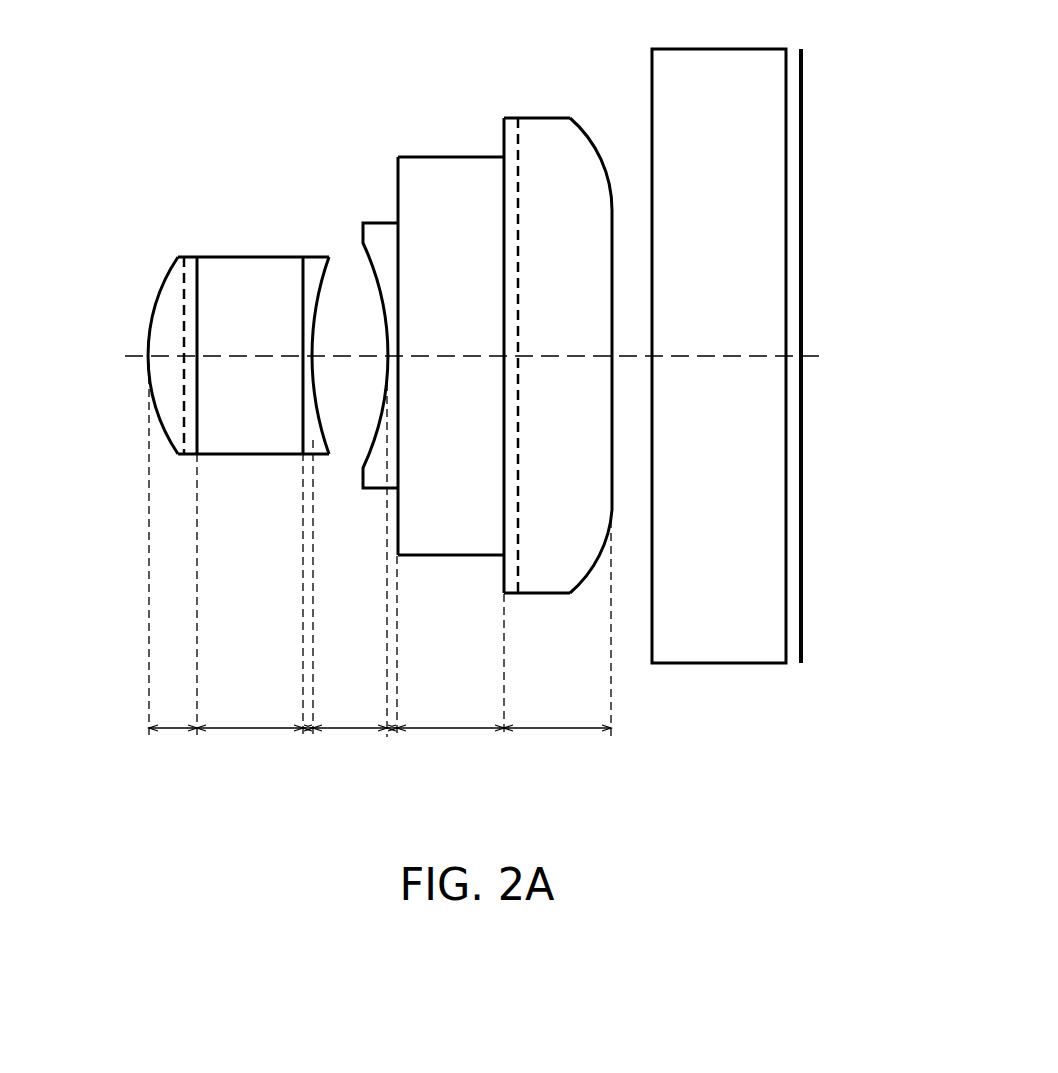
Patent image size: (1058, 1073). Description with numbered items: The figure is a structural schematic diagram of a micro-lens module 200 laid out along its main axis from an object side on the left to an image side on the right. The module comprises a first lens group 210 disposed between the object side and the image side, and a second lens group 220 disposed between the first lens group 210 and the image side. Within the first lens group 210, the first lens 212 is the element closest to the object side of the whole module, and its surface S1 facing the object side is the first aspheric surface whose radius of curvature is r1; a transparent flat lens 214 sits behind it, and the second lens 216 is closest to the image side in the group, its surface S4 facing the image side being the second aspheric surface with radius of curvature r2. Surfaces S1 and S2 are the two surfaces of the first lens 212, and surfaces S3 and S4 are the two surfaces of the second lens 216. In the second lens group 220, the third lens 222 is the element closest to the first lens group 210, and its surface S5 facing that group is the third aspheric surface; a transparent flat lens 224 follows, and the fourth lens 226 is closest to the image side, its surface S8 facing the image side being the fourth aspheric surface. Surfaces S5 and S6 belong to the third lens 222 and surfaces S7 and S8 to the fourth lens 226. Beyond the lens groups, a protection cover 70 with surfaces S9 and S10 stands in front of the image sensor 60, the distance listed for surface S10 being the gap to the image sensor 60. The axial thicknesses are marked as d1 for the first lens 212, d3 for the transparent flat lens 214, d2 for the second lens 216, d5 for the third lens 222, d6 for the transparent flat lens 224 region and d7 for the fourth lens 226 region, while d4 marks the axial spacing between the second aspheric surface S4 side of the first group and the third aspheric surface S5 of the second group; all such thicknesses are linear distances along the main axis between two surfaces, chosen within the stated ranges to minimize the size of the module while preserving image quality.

The micro-lens module 200 is at (477, 396).
The first lens group 210 is at (230, 374).
The first lens 212 is at (161, 349).
The transparent flat lens 214 is at (249, 349).
The second lens 216 is at (298, 349).
The second lens group 220 is at (473, 386).
The third lens 222 is at (366, 407).
The transparent flat lens 224 is at (451, 359).
The fourth lens 226 is at (558, 359).
The protection cover 70 is at (731, 364).
The image sensor 60 is at (803, 633).
The first aspheric surface S1 is at (164, 278).
The surface of the first lens S2 is at (199, 279).
The surface of the second lens S3 is at (302, 278).
The second aspheric surface S4 is at (329, 279).
The third aspheric surface S5 is at (375, 268).
The surface of the third lens S6 is at (402, 179).
The surface of the fourth lens S7 is at (503, 182).
The fourth aspheric surface S8 is at (589, 138).
The surface of the protection cover S9 is at (650, 62).
The surface of the protection cover S10 is at (788, 82).
The thickness of the first lens d1 is at (173, 572).
The thickness of the second lens d2 is at (305, 610).
The thickness of the transparent flat lens d3 is at (250, 610).
The thickness of the third lens d4 is at (392, 668).
The thickness of the fourth lens d5 is at (350, 575).
The thickness of the transparent flat lens d6 is at (450, 687).
The distance between the second and third aspheric surfaces d7 is at (557, 650).